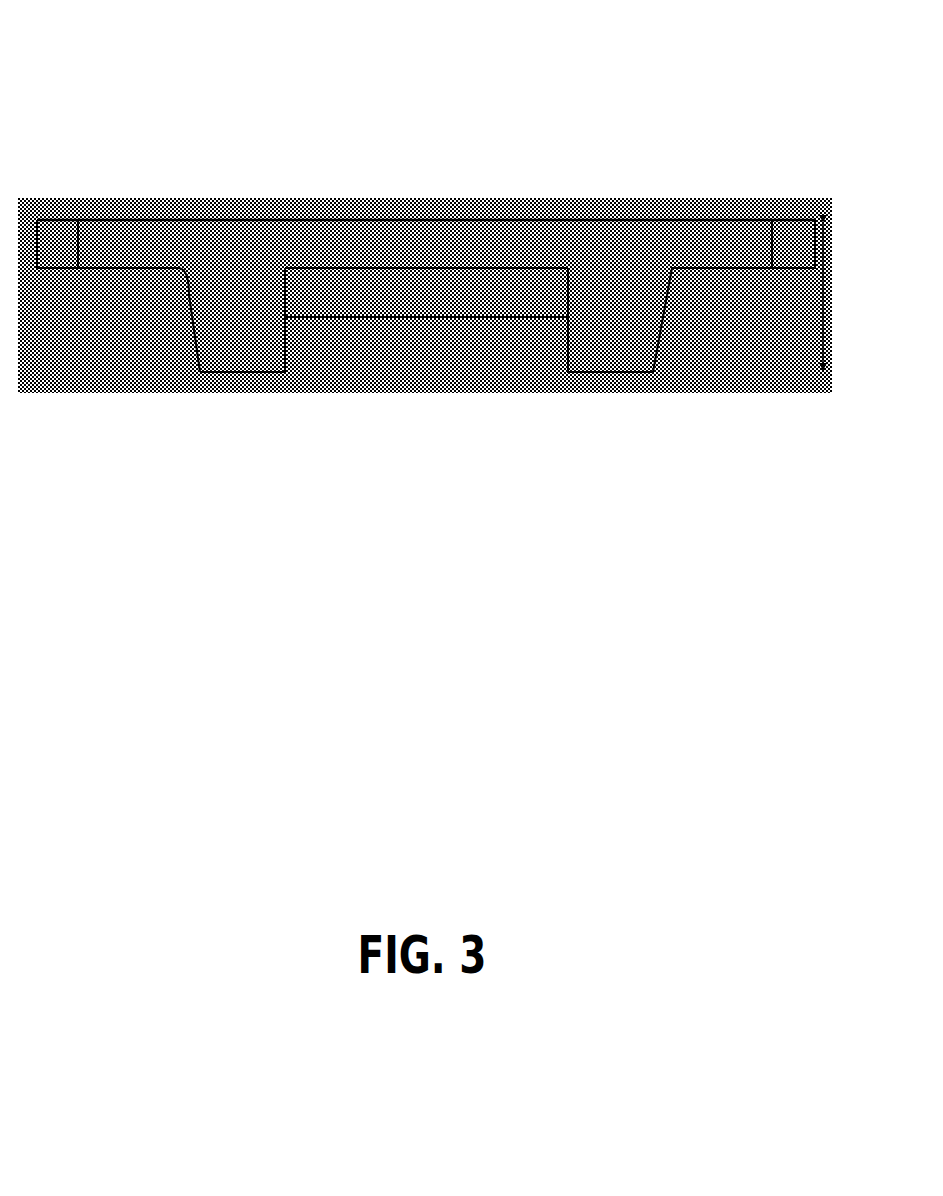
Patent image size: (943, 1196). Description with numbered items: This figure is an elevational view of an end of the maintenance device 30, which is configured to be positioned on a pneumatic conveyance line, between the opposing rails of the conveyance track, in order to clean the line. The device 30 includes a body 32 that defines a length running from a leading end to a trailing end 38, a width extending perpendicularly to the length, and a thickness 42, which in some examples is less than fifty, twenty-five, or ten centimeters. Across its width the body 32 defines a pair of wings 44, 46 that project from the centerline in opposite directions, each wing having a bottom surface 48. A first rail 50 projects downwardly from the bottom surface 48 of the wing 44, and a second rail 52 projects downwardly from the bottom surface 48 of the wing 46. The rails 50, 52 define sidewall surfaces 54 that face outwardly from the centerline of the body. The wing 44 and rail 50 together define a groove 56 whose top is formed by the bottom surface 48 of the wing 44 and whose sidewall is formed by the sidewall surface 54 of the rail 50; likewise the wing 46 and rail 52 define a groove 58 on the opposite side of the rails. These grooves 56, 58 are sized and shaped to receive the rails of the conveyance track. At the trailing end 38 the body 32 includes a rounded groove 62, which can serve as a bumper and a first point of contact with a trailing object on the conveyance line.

The maintenance device 30 is at (178, 110).
The body 32 is at (287, 215).
The trailing end 38 is at (578, 218).
The thickness 42 is at (830, 278).
The wing 44 is at (102, 219).
The wing 46 is at (732, 216).
The bottom surface 48 is at (87, 268).
The first rail 50 is at (229, 316).
The second rail 52 is at (613, 329).
The sidewall surface 54 is at (189, 306).
The groove 56 is at (159, 273).
The groove 58 is at (684, 273).
The rounded groove 62 is at (421, 298).